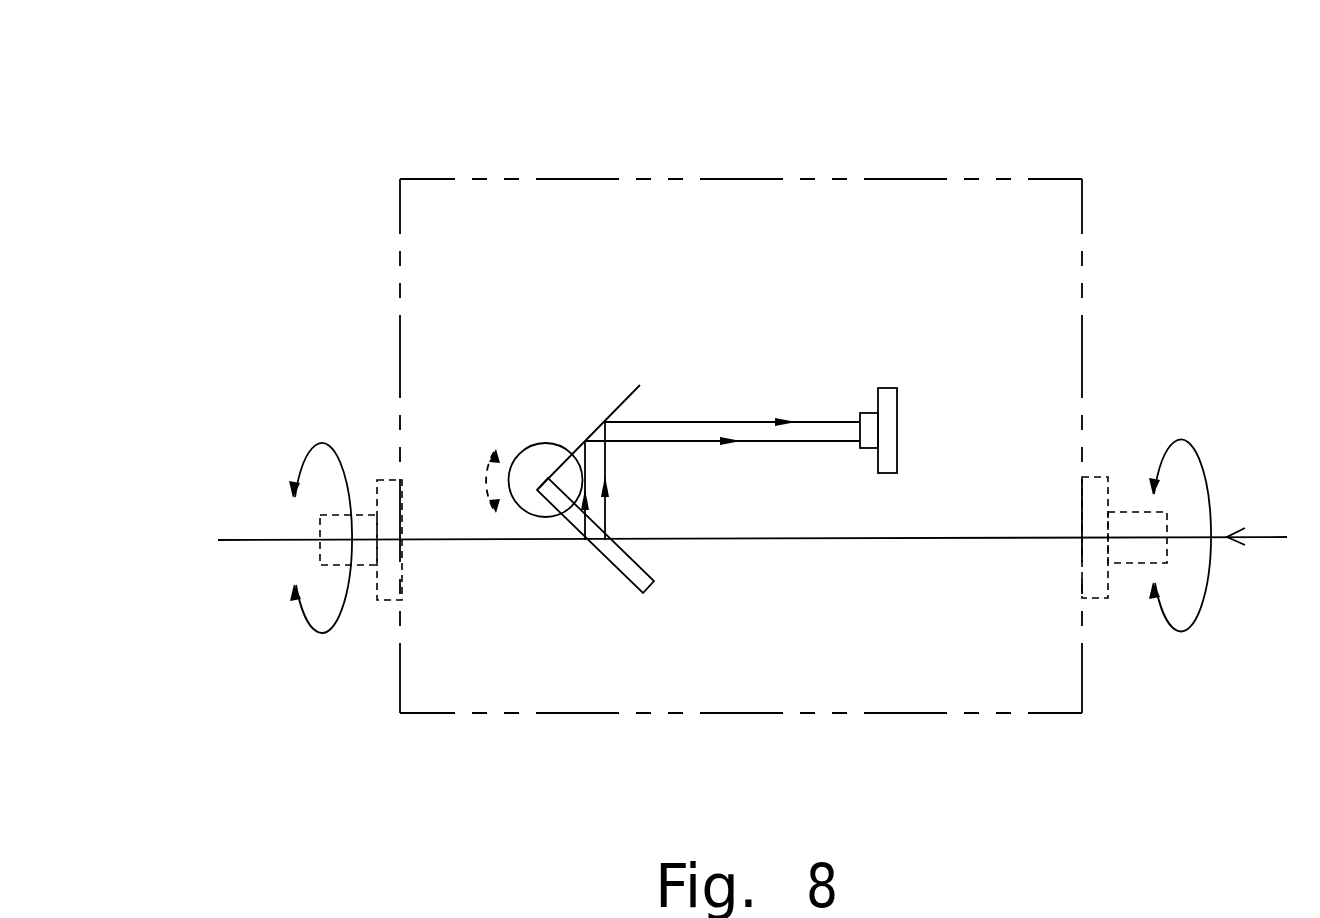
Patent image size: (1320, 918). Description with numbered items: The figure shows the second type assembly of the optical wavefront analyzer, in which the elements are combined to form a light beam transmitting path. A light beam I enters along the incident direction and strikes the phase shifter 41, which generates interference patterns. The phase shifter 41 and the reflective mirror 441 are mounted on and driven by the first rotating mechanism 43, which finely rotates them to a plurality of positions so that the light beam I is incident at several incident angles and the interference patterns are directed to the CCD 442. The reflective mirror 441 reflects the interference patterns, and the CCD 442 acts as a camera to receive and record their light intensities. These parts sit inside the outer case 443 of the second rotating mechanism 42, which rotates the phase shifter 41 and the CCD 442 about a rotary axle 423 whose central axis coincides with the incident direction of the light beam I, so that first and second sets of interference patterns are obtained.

The outer case 443 is at (767, 179).
The rotary axle 423 is at (280, 542).
The second rotating mechanism 42 is at (393, 490).
The first rotating mechanism 43 is at (522, 468).
The reflective mirror 441 is at (615, 409).
The phase shifter 41 is at (633, 583).
The CCD 442 is at (887, 433).
The light beam I is at (1265, 525).